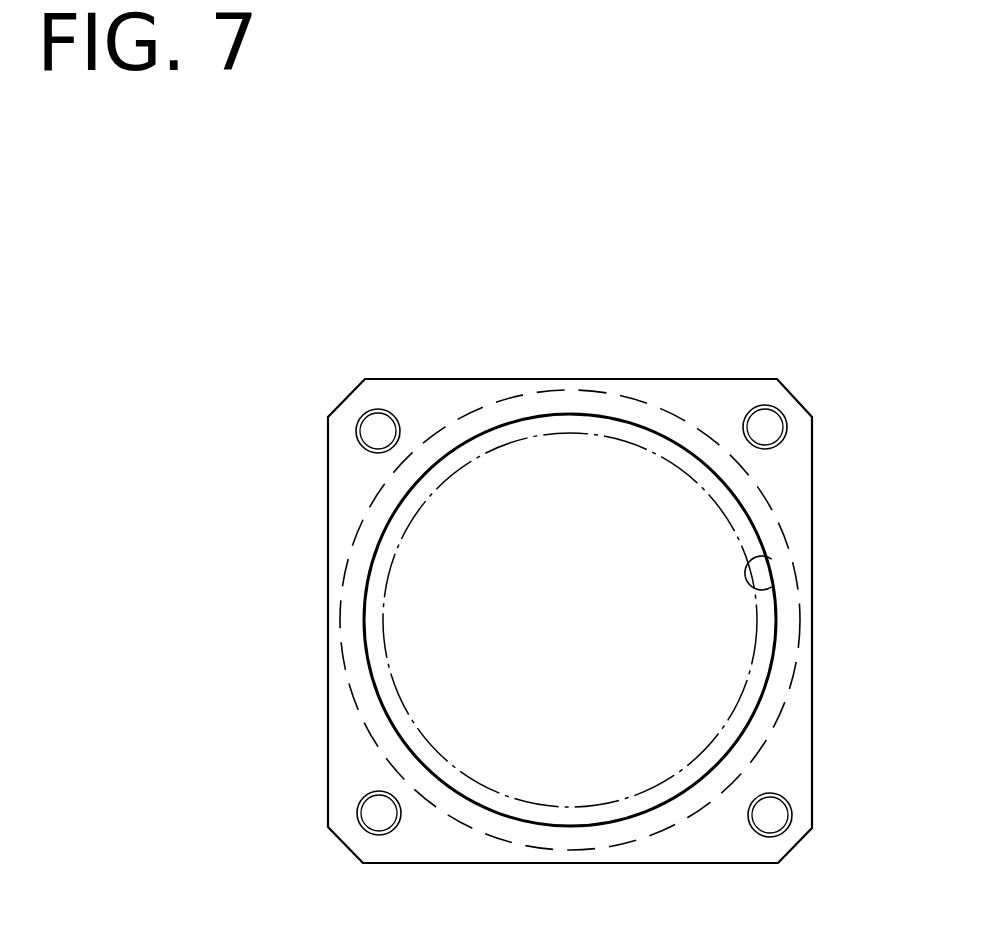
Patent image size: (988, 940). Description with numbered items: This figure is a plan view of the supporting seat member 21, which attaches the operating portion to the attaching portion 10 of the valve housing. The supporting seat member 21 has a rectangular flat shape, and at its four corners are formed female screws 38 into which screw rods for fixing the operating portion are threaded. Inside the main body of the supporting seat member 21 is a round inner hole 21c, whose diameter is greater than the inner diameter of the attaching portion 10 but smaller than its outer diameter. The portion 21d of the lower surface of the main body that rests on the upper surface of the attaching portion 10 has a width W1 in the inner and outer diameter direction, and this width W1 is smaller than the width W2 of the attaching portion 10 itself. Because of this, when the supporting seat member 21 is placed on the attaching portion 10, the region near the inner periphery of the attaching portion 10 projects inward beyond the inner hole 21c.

The attaching portion 10 is at (530, 435).
The supporting seat member 21 is at (672, 395).
The inner hole 21c is at (775, 588).
The portion of lower surface of main body portion 21d is at (376, 512).
The female screw 38 is at (380, 425).
The width of contact portion W1 is at (379, 625).
The width of attaching portion W2 is at (447, 680).